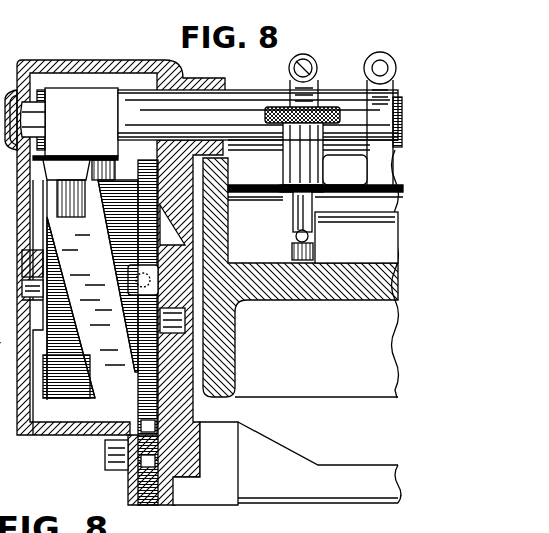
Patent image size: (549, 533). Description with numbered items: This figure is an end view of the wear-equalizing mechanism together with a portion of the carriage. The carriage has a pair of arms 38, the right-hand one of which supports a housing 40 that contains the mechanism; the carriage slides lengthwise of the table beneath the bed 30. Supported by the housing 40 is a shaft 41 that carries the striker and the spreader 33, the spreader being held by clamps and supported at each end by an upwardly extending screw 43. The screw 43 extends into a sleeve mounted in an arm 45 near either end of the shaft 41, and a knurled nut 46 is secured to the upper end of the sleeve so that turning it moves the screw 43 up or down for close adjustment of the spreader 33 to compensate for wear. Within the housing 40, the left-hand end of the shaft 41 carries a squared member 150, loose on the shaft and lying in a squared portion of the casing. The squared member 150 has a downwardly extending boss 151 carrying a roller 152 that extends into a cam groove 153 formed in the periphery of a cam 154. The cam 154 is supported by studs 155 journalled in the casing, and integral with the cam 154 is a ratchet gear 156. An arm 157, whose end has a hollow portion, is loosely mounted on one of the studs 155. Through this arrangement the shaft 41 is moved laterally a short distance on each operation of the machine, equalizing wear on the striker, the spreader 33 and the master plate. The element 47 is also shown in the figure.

The housing 40 is at (93, 64).
The squared member 150 is at (78, 96).
The roller 152 is at (70, 177).
The boss 151 is at (90, 166).
The shaft 41 is at (233, 98).
The knurled nut 46 is at (292, 105).
The arm 45 is at (310, 92).
The eye bolt 47 is at (377, 92).
The screw 43 is at (300, 212).
The bed 30 is at (308, 292).
The spreader 33 is at (360, 255).
The arms 38 is at (347, 487).
The ratchet gear 156 is at (158, 408).
The cam groove 153 is at (90, 375).
The cam 154 is at (50, 393).
The arm 157 is at (22, 250).
The studs 155 is at (24, 290).